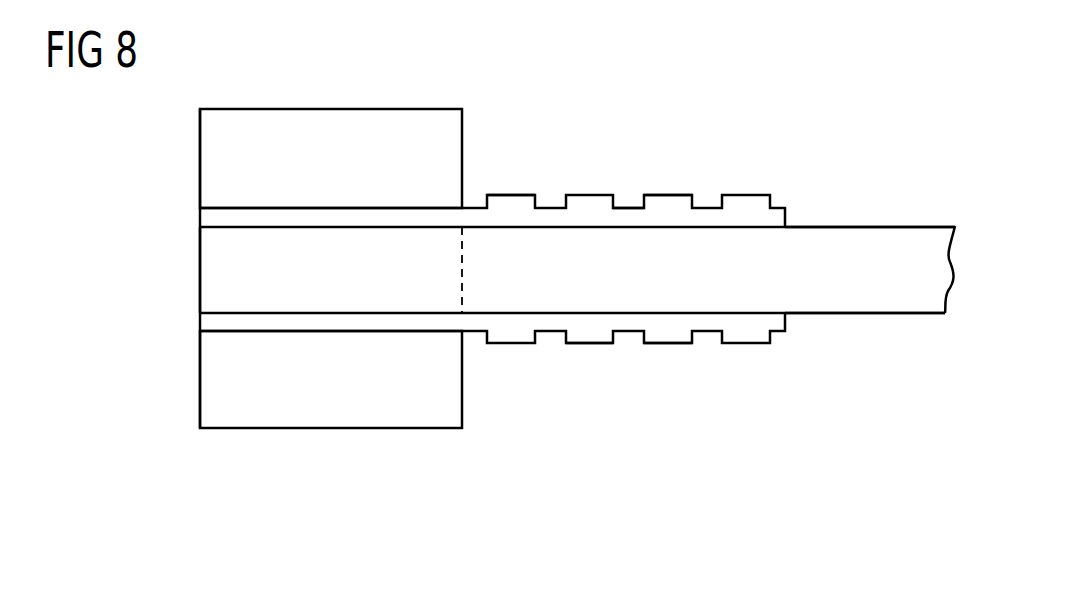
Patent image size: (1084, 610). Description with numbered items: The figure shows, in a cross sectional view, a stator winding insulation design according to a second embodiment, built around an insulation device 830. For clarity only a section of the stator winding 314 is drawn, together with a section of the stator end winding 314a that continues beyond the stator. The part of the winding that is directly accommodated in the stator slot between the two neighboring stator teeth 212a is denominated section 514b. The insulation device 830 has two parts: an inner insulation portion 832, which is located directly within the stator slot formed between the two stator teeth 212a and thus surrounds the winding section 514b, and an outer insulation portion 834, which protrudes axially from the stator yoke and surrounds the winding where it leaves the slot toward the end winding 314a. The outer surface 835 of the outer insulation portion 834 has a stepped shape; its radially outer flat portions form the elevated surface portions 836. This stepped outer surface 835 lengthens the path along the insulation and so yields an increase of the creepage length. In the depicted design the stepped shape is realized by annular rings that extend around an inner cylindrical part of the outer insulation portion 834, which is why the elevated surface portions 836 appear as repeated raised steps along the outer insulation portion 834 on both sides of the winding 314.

The stator teeth 212a is at (463, 120).
The stator winding 314 is at (160, 262).
The stator end winding 314a is at (858, 303).
The section of the stator winding accommodated between two stator teeth 514b is at (208, 288).
The insulation device 830 is at (173, 212).
The inner insulation portion 832 is at (330, 217).
The outer insulation portion 834 is at (630, 186).
The outer surface 835 is at (550, 207).
The elevated surface portions 836 is at (670, 196).